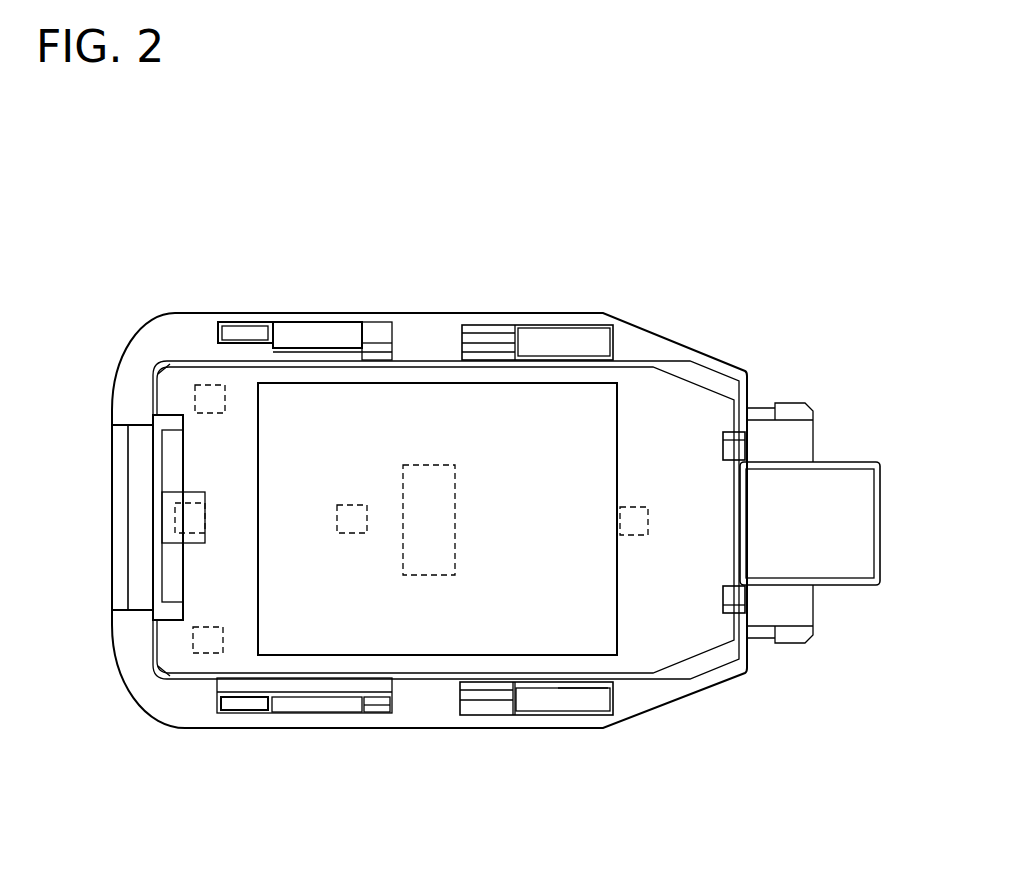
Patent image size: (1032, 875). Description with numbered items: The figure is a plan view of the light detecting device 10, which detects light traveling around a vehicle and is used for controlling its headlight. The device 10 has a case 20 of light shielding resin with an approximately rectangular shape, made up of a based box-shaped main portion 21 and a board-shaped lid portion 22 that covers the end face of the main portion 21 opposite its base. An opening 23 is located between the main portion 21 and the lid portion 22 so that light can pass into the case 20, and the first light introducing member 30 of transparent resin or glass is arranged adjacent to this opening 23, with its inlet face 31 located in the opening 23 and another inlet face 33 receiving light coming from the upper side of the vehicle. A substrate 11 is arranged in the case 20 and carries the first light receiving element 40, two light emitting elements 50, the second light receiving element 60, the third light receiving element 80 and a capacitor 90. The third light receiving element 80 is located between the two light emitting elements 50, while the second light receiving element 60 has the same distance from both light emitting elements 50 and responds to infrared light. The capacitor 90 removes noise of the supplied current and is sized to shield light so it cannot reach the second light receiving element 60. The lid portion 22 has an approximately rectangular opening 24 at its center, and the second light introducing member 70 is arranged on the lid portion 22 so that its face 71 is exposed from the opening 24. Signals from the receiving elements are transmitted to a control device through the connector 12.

The device 10 is at (683, 242).
The substrate 11 is at (288, 557).
The connector 12 is at (880, 530).
The case 20 is at (428, 313).
The main portion 21 is at (500, 325).
The lid portion 22 is at (692, 413).
The opening 23 is at (183, 443).
The opening 24 is at (615, 433).
The first light introducing member 30 is at (172, 448).
The inlet face 31 is at (173, 481).
The inlet face 33 is at (195, 517).
The first light receiving element 40 is at (350, 535).
The light emitting element 50 is at (210, 385).
The second light receiving element 60 is at (632, 536).
The second light introducing member 70 is at (519, 612).
The face 71 is at (558, 612).
The third light receiving element 80 is at (190, 535).
The capacitor 90 is at (420, 576).